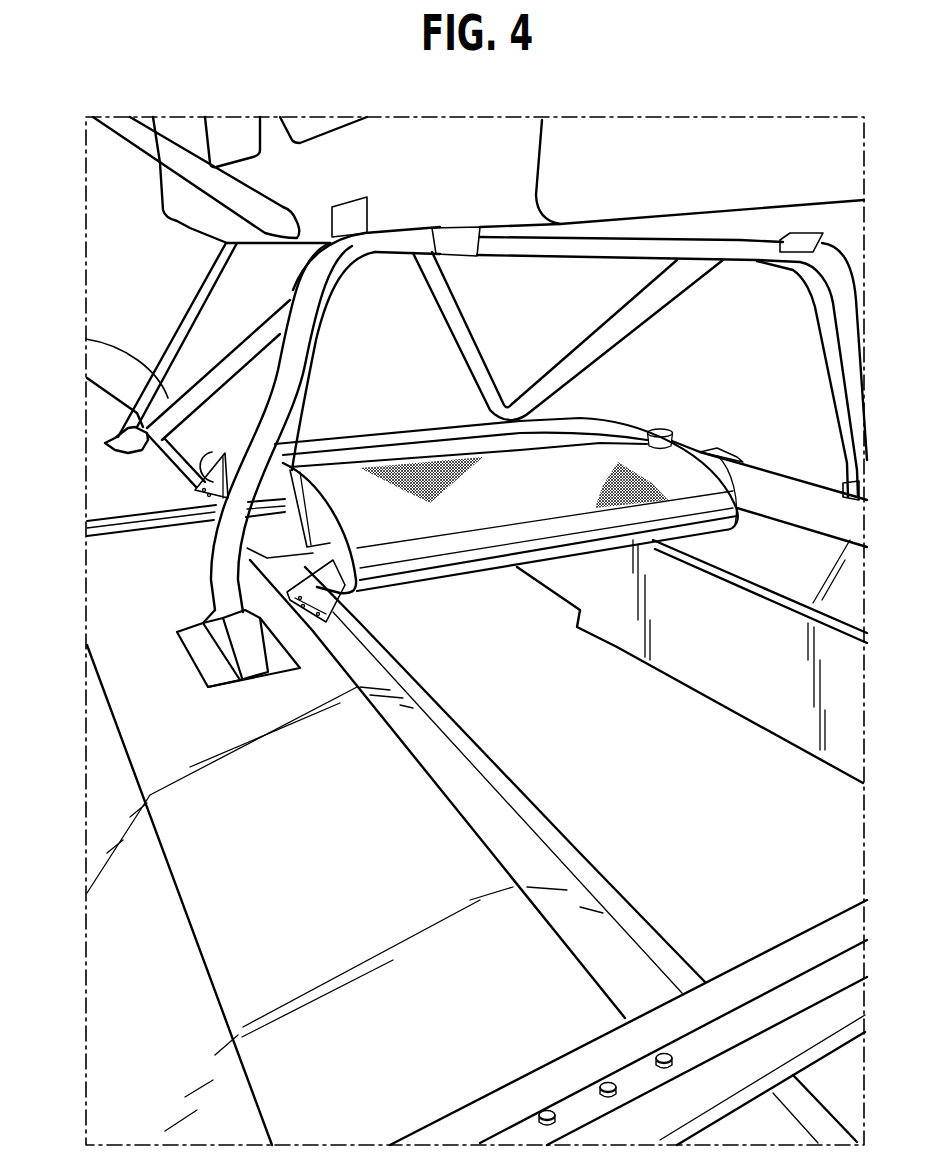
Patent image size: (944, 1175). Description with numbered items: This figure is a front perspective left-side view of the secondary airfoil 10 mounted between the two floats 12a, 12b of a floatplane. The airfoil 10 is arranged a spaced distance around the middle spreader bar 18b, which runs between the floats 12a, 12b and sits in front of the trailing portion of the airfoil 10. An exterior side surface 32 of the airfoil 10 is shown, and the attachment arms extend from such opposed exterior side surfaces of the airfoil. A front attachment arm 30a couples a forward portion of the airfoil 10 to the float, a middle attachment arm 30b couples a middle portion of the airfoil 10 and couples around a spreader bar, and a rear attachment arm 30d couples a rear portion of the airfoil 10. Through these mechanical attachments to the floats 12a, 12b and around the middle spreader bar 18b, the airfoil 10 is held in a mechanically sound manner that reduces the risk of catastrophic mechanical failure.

The secondary airfoil 10 is at (557, 492).
The float 12a is at (830, 518).
The float 12b is at (438, 891).
The middle spreader bar 18b is at (115, 510).
The front attachment arm 30a is at (340, 587).
The middle attachment arm 30b is at (282, 546).
The rear attachment arm 30d is at (210, 460).
The exterior side surface 32 is at (328, 535).